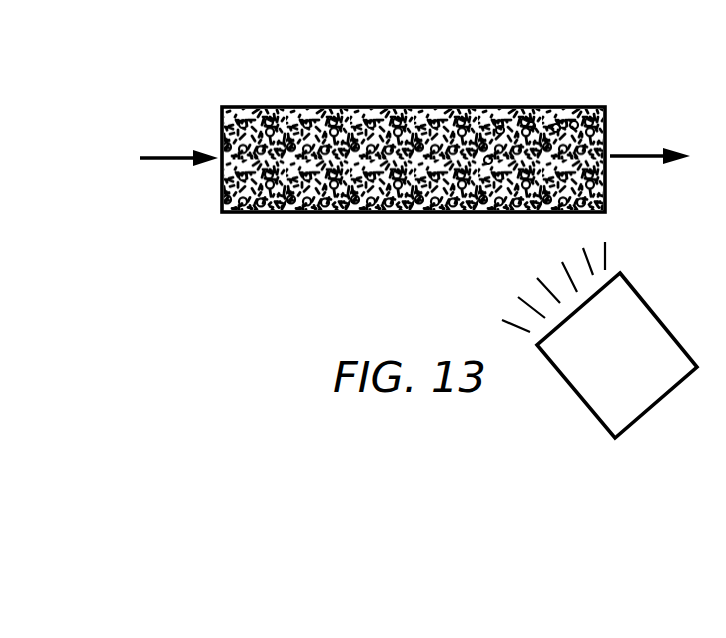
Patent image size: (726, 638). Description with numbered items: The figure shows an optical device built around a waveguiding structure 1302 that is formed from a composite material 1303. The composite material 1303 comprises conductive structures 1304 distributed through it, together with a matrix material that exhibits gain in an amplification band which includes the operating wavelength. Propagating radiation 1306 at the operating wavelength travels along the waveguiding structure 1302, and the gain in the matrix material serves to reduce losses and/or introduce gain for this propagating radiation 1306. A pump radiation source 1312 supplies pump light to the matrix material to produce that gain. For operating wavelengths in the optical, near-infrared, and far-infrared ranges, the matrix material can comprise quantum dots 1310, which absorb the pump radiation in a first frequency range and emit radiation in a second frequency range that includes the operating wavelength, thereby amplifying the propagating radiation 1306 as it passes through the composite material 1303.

The waveguiding structure 1302 is at (430, 92).
The composite material 1303 is at (325, 107).
The conductive structures 1304 is at (500, 108).
The propagating radiation 1306 is at (172, 150).
The quantum dots 1310 is at (572, 115).
The pump radiation source 1312 is at (655, 310).